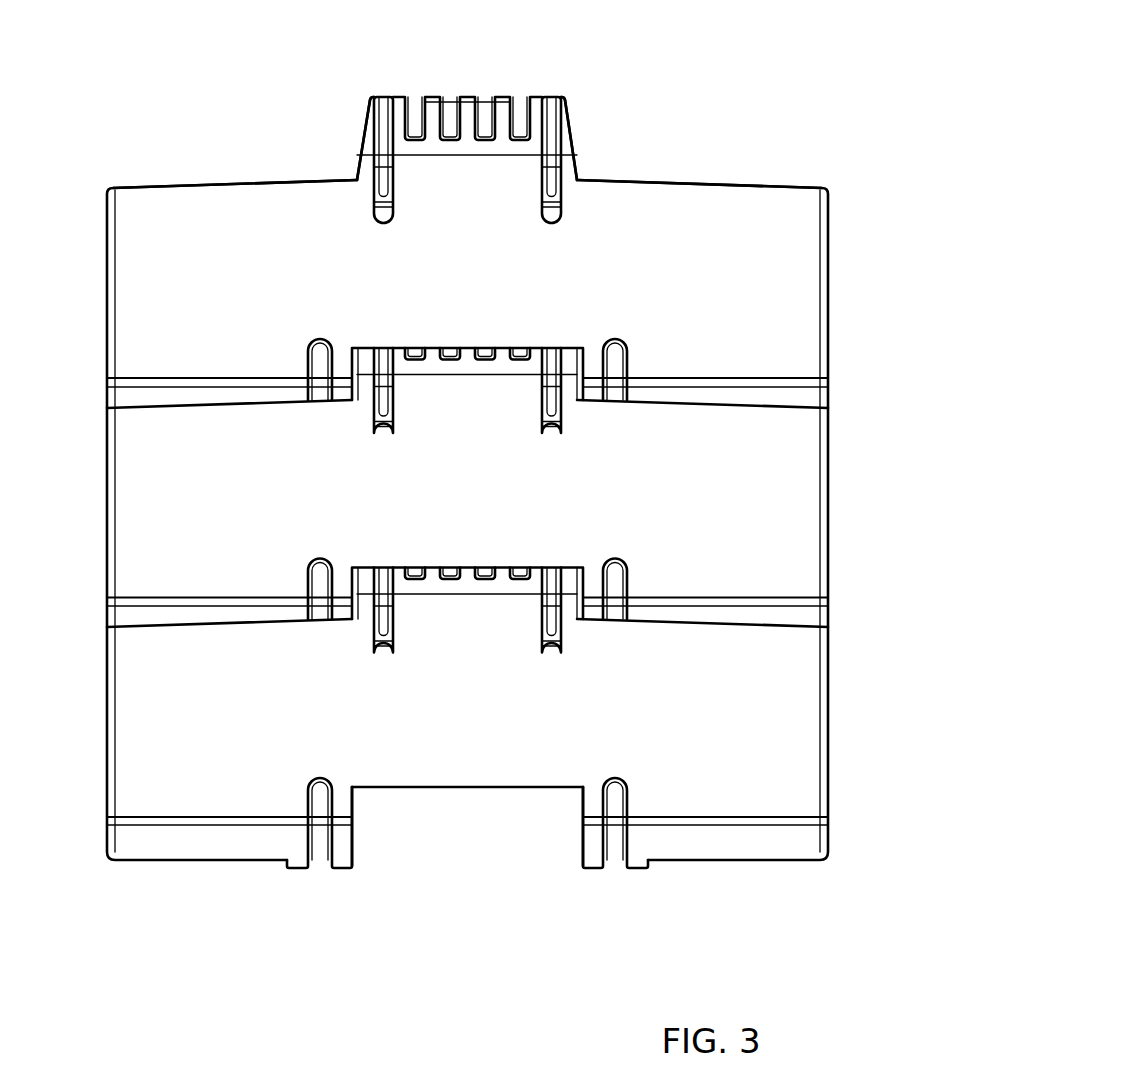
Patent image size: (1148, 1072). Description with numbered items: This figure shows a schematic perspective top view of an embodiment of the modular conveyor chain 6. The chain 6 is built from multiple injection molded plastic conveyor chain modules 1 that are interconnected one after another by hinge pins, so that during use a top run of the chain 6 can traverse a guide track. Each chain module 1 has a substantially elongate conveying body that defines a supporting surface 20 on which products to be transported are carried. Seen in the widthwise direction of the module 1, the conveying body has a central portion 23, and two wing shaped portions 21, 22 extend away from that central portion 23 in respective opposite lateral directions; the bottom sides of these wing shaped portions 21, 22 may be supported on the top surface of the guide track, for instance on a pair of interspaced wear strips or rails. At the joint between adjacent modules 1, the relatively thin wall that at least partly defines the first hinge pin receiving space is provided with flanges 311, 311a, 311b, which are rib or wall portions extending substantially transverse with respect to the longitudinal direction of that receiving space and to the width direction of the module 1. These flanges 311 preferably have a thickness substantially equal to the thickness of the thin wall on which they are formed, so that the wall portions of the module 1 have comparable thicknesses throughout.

The conveyor chain module 1 is at (878, 503).
The modular conveyor chain 6 is at (685, 160).
The supporting surface 20 is at (757, 728).
The wing shaped portion 21 is at (211, 783).
The wing shaped portion 22 is at (726, 783).
The central portion 23 is at (468, 760).
The flange 311 is at (467, 138).
The flange 311a is at (569, 142).
The flange 311b is at (365, 142).